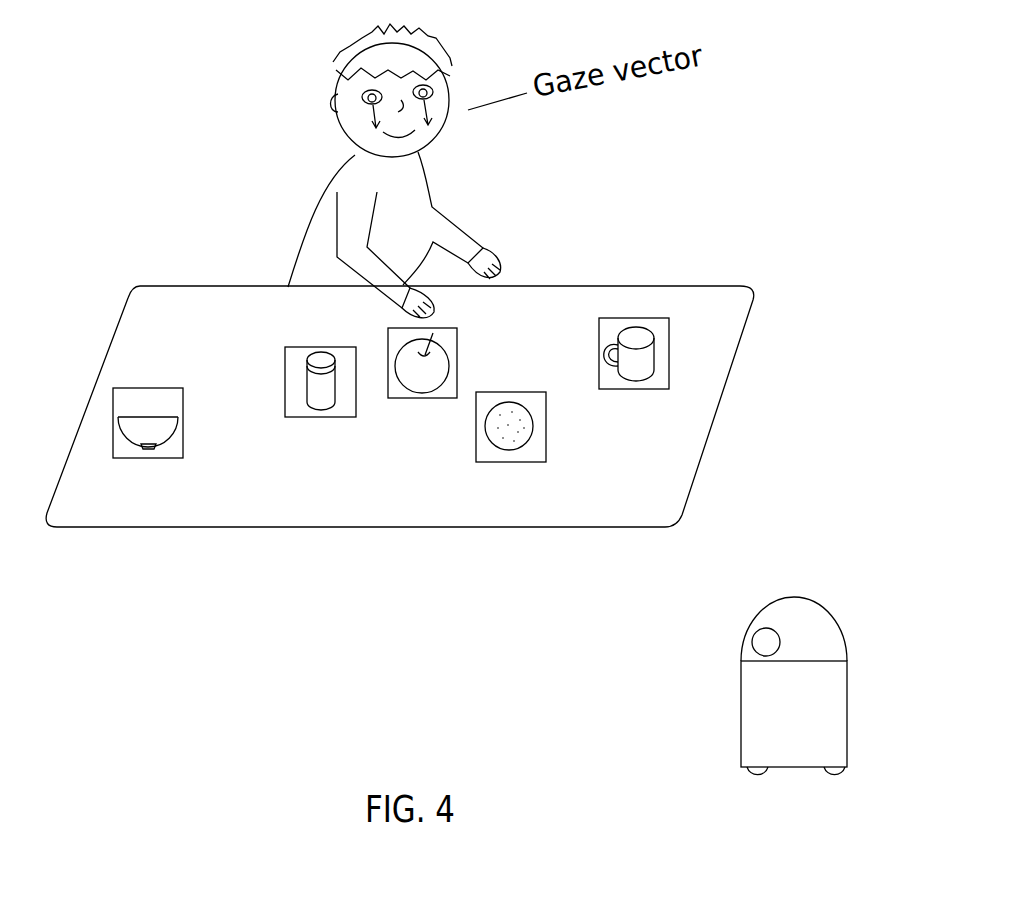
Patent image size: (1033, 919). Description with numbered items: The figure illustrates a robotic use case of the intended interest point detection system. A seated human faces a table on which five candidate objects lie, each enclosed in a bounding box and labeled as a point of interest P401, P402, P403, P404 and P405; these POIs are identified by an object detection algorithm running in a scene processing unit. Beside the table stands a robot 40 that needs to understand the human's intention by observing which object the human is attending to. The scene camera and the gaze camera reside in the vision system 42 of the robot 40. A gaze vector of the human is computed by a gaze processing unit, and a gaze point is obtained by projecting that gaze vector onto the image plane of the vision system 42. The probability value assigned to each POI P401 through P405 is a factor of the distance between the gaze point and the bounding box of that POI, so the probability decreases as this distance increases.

The point of interest P401 is at (320, 417).
The point of interest P402 is at (422, 398).
The point of interest P403 is at (510, 462).
The point of interest P404 is at (636, 389).
The point of interest P405 is at (150, 458).
The robot 40 is at (795, 666).
The vision system 42 is at (758, 630).